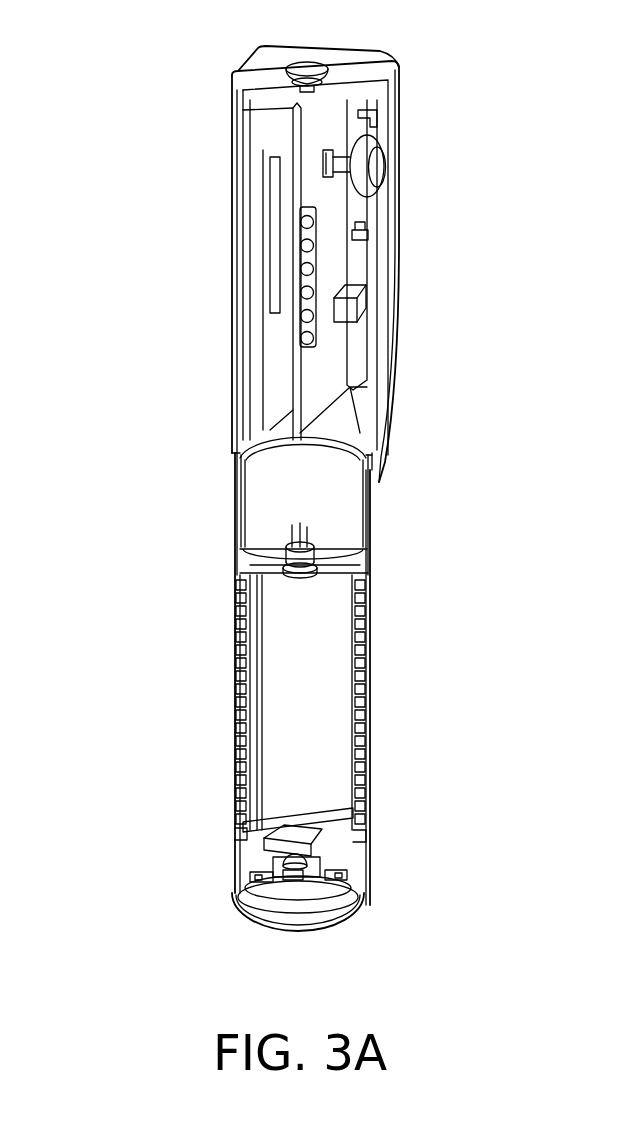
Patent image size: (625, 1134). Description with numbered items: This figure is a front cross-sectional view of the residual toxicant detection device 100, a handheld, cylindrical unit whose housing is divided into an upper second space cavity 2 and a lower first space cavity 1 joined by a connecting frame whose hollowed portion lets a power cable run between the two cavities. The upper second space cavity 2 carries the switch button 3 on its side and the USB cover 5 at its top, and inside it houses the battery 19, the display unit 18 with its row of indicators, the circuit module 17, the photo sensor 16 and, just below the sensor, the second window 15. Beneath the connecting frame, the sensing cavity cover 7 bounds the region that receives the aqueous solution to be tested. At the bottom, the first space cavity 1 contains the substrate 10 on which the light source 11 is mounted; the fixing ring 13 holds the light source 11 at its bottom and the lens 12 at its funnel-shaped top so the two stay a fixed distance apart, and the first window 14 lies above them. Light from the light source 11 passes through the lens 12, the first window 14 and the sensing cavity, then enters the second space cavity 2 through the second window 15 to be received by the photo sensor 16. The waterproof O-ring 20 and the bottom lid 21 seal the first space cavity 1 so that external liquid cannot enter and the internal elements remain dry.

The residual toxicant detection device 100 is at (98, 64).
The first space cavity 1 is at (362, 897).
The second space cavity 2 is at (232, 387).
The switch button 3 is at (384, 160).
The USB cover 5 is at (310, 67).
The sensing cavity cover 7 is at (240, 813).
The substrate 10 is at (273, 887).
The light source 11 is at (333, 868).
The lens 12 is at (298, 862).
The fixing ring 13 is at (272, 858).
The first window 14 is at (300, 832).
The second window 15 is at (305, 574).
The photo sensor 16 is at (320, 552).
The circuit module 17 is at (330, 261).
The display unit 18 is at (297, 337).
The battery 19 is at (262, 245).
The waterproof O-ring 20 is at (347, 917).
The bottom lid 21 is at (243, 925).